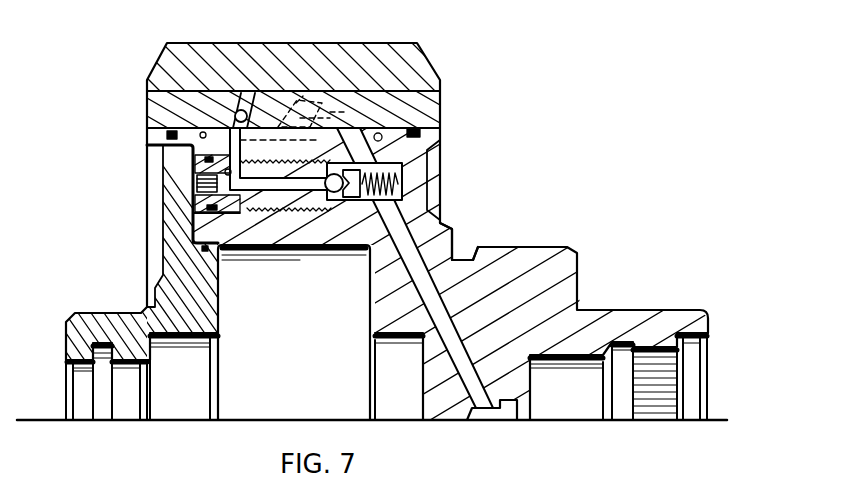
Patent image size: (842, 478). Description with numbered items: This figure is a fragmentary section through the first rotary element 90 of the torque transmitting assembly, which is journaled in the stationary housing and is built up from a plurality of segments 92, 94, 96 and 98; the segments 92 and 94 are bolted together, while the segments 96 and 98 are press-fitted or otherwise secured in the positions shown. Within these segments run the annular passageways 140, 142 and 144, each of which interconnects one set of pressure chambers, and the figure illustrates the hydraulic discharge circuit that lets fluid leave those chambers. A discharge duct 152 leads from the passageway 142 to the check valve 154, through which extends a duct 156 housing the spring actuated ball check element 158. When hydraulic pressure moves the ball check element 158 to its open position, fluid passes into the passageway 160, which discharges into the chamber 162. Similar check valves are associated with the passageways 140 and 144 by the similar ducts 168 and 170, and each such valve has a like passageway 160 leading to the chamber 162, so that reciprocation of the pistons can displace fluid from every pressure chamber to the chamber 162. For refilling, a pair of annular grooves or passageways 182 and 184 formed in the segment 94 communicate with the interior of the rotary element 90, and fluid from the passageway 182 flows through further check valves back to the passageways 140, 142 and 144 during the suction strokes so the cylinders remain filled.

The first rotary element 90 is at (517, 192).
The segment 92 is at (219, 287).
The segment 94 is at (441, 172).
The segment 96 is at (441, 110).
The segment 98 is at (441, 62).
The passageway 140 is at (292, 100).
The passageway 142 is at (243, 111).
The passageway 144 is at (332, 112).
The discharge duct 152 is at (234, 117).
The check valve 154 is at (188, 208).
The duct 156 is at (225, 174).
The spring actuated ball check element 158 is at (334, 193).
The passageway 160 is at (444, 226).
The chamber 162 is at (471, 420).
The duct 168 is at (303, 102).
The duct 170 is at (346, 113).
The annular groove or passageway 182 is at (377, 141).
The annular groove or passageway 184 is at (157, 143).